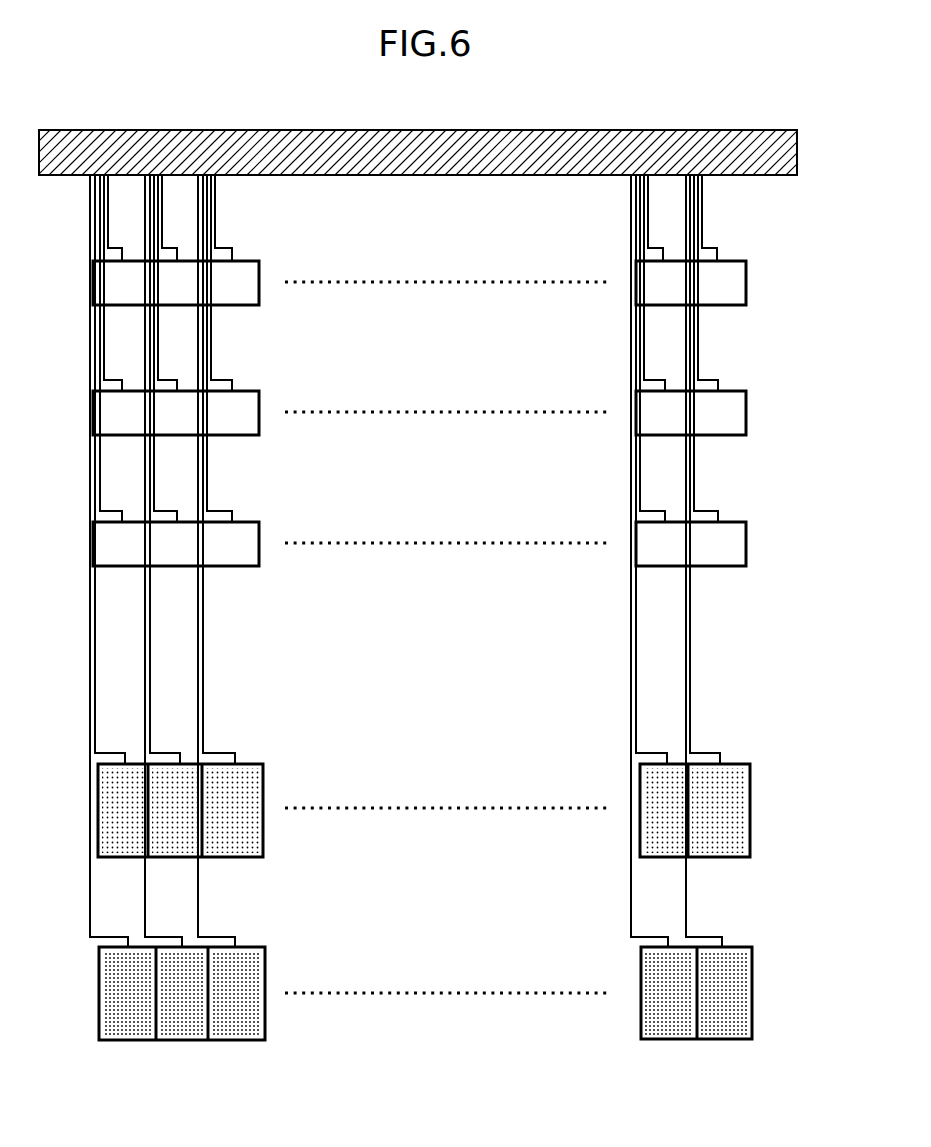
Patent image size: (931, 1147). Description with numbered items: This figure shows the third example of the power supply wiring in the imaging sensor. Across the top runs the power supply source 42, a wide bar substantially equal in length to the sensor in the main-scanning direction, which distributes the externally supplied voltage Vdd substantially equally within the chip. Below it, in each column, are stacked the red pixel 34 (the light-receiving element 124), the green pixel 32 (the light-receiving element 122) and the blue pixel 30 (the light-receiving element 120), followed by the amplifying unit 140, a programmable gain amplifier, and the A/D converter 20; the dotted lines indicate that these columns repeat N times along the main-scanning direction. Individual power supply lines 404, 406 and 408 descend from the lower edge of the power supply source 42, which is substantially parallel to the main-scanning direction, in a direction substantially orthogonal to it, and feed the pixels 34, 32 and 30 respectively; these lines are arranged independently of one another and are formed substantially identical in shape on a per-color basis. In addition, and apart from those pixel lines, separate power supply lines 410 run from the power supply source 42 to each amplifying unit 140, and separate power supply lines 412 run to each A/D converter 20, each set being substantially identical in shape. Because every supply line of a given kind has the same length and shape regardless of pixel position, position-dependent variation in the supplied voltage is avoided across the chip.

The power supply source 42 is at (416, 116).
The power supply line 404 is at (240, 216).
The power supply line 406 is at (238, 347).
The power supply line 408 is at (238, 479).
The power supply line 410 is at (97, 740).
The power supply line 412 is at (94, 912).
The pixel 34 is at (452, 271).
The light-receiving element 124 is at (734, 245).
The pixel 32 is at (459, 400).
The light-receiving element 122 is at (736, 374).
The pixel 30 is at (453, 531).
The light-receiving element 120 is at (736, 504).
The amplifying unit 140 is at (741, 747).
The A/D converter 20 is at (741, 929).